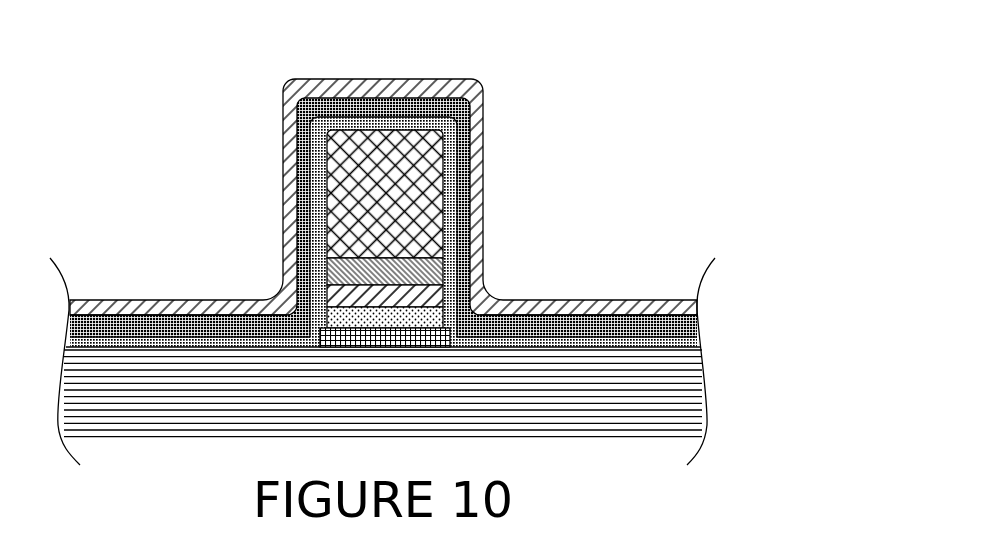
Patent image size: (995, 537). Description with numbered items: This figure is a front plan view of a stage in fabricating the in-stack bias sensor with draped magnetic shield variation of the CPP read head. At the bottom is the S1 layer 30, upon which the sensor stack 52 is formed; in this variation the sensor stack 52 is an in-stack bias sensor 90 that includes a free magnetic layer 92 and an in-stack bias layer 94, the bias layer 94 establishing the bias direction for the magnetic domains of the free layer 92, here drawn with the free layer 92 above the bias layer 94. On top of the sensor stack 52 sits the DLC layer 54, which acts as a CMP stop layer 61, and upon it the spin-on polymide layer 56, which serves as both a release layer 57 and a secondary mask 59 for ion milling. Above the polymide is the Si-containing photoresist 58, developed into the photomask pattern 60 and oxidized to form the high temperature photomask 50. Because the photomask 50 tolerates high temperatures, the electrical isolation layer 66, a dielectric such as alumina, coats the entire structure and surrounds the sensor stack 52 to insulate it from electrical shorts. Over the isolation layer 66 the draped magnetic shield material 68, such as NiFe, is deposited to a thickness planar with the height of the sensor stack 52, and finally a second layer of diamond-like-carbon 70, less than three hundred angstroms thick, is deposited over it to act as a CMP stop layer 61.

The S1 layer 30 is at (697, 405).
The second layer of diamond-like-carbon 70 is at (383, 161).
The CMP stop layer 61 is at (482, 112).
The draped magnetic shield material 68 is at (470, 167).
The free magnetic layer 92 is at (287, 317).
The electrical isolation layer 66 is at (472, 215).
The in-stack bias layer 94 is at (283, 333).
The Si-containing photoresist 58 is at (299, 146).
The photomask pattern 60 is at (299, 146).
The high temperature photomask 50 is at (337, 153).
The spin-on polymide layer 56 is at (512, 226).
The release layer 57 is at (512, 226).
The secondary mask 59 is at (478, 258).
The DLC layer 54 is at (485, 292).
The sensor stack 52 is at (485, 297).
The in-stack bias sensor 90 is at (458, 329).